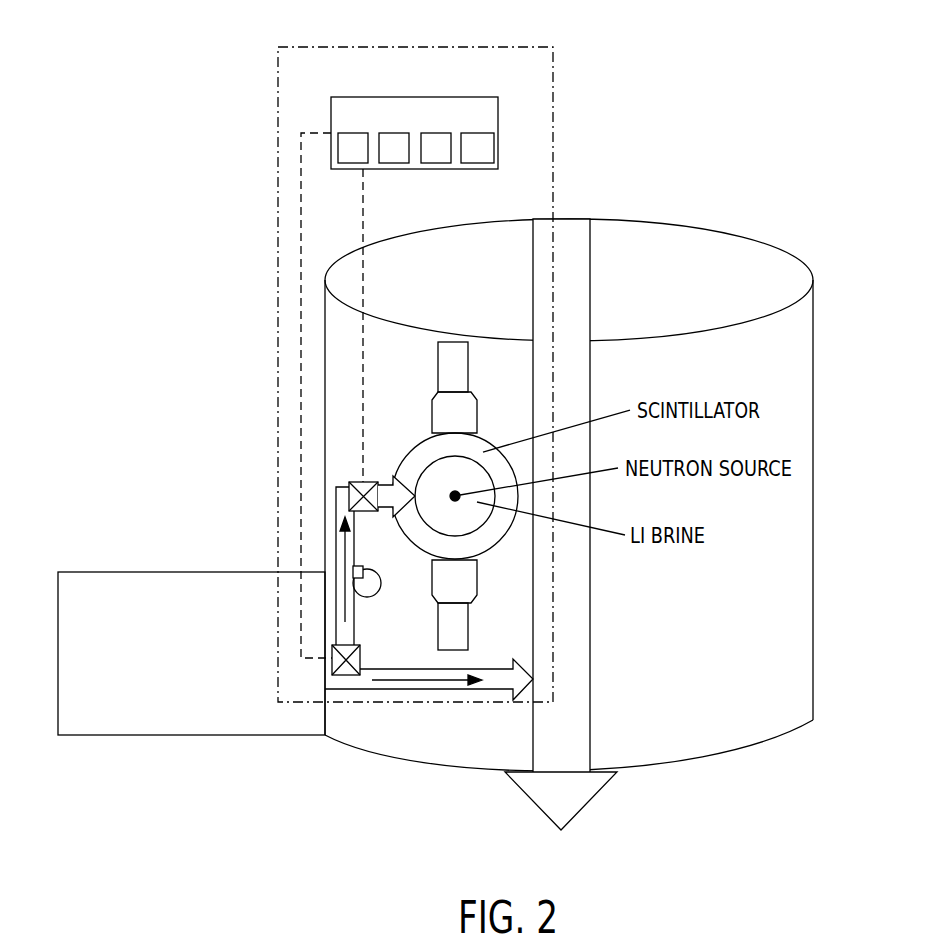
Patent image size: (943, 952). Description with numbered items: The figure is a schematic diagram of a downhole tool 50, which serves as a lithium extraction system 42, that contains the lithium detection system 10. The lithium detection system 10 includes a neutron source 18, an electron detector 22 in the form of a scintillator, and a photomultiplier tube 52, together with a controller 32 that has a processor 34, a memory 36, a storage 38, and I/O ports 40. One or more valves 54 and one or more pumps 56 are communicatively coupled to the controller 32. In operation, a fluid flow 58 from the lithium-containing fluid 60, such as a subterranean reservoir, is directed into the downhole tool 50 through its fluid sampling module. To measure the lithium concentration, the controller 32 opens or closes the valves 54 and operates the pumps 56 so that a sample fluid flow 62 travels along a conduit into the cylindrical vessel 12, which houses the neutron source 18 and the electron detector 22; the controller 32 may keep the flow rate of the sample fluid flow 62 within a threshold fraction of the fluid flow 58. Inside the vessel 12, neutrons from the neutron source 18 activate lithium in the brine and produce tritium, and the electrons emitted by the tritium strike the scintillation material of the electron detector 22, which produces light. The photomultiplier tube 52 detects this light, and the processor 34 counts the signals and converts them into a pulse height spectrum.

The lithium detection system 10 is at (414, 46).
The vessel 12 is at (449, 492).
The neutron source 18 is at (457, 500).
The electron detector 22 is at (476, 448).
The controller 32 is at (412, 140).
The processor 34 is at (348, 165).
The memory 36 is at (396, 165).
The storage 38 is at (437, 165).
The I/O ports 40 is at (477, 165).
The lithium extraction system 42 is at (570, 481).
The downhole tool 50 is at (706, 228).
The photomultiplier tube 52 is at (438, 352).
The valves 54 is at (351, 482).
The pumps 56 is at (379, 583).
The fluid flow 58 is at (408, 680).
The lithium-containing fluid 60 is at (157, 572).
The sample fluid flow 62 is at (355, 547).